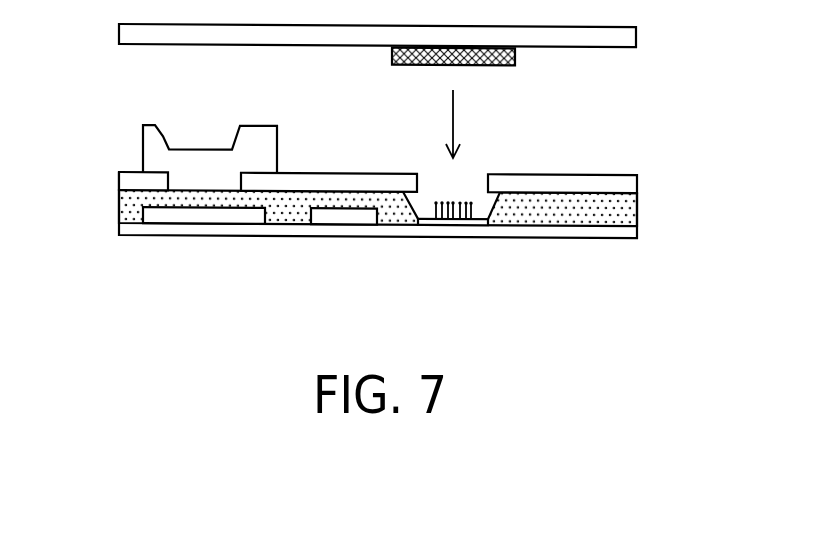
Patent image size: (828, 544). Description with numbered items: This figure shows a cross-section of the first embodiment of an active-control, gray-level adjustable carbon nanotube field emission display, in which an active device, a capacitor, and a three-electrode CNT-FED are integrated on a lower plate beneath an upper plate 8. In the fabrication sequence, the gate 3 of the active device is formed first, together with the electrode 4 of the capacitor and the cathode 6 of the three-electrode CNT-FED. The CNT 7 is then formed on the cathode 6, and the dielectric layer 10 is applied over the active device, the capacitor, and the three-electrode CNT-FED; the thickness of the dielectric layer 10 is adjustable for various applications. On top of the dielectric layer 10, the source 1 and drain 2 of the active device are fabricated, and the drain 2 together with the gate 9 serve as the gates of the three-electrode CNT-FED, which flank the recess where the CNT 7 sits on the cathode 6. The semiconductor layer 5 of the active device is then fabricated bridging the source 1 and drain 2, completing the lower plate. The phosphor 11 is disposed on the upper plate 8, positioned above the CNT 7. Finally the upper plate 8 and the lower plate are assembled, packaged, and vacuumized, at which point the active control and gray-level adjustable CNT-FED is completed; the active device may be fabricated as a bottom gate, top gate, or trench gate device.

The source 1 is at (130, 178).
The drain 2 is at (340, 182).
The gate 3 is at (199, 213).
The electrode 4 is at (343, 213).
The semiconductor layer 5 is at (156, 140).
The cathode 6 is at (456, 220).
The CNT 7 is at (437, 198).
The upper plate 8 is at (626, 37).
The gate 9 is at (627, 183).
The dielectric layer 10 is at (627, 212).
The phosphor 11 is at (516, 51).